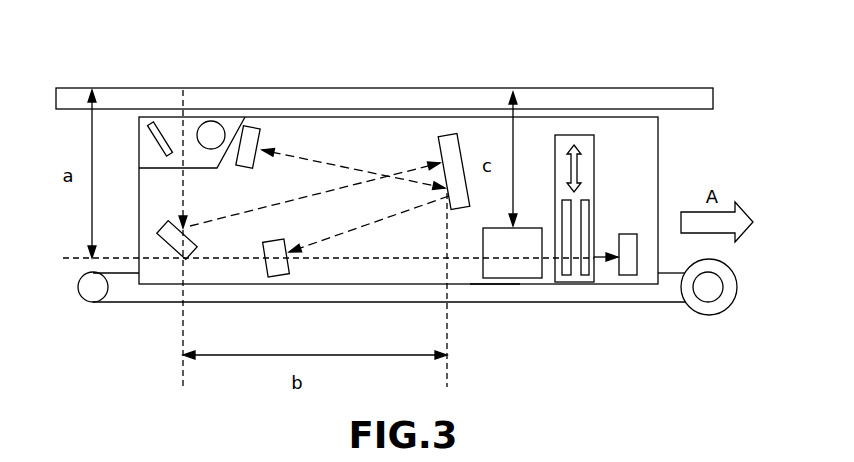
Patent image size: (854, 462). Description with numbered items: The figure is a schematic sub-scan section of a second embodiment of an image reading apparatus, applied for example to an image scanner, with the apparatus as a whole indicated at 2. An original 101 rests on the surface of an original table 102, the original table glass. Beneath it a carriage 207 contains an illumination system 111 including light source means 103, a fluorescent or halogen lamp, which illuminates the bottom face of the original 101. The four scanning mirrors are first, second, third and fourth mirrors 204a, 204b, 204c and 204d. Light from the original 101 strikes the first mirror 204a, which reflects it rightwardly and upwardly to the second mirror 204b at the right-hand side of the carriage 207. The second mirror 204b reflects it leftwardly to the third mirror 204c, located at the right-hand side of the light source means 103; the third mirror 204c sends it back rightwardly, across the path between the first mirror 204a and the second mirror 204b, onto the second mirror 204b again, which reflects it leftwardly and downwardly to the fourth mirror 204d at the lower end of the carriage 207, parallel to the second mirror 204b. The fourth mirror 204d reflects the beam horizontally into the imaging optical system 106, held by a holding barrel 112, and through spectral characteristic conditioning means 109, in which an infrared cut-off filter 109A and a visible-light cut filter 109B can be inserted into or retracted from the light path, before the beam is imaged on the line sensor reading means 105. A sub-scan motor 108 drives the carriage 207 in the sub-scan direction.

The image reading apparatus 2 is at (105, 73).
The original 101 is at (193, 88).
The original table 102 is at (653, 93).
The light source means 103 is at (215, 123).
The reading means 105 is at (632, 277).
The imaging optical system 106 is at (528, 278).
The sub-scan motor 108 is at (407, 306).
The spectral characteristic conditioning means 109 is at (580, 133).
The high-polymer multilayered-film filter 109A is at (563, 198).
The high-polymer multilayered-film filter 109B is at (587, 198).
The illumination system 111 is at (150, 121).
The holding barrel 112 is at (497, 282).
The first mirror 204a is at (193, 253).
The second mirror 204b is at (448, 137).
The third mirror 204c is at (253, 125).
The fourth mirror 204d is at (289, 278).
The carriage 207 is at (660, 170).